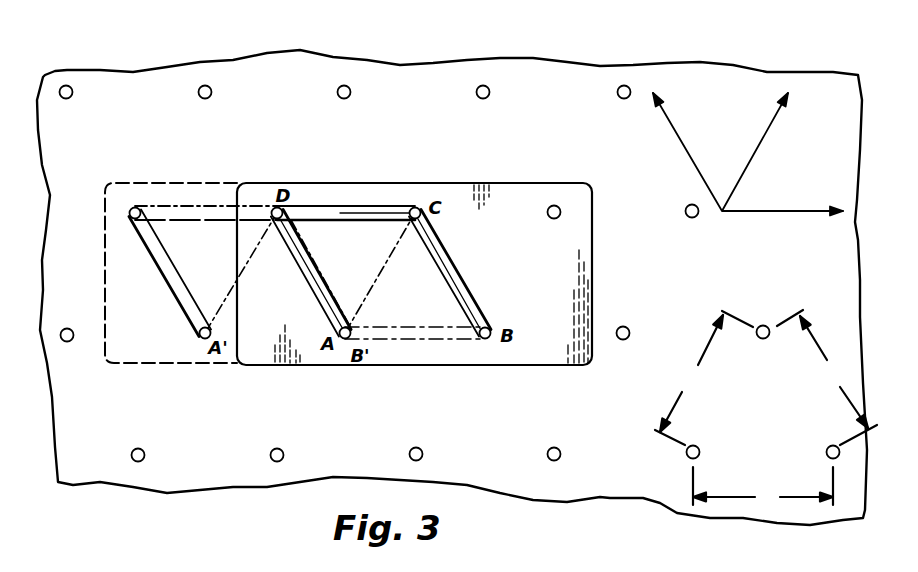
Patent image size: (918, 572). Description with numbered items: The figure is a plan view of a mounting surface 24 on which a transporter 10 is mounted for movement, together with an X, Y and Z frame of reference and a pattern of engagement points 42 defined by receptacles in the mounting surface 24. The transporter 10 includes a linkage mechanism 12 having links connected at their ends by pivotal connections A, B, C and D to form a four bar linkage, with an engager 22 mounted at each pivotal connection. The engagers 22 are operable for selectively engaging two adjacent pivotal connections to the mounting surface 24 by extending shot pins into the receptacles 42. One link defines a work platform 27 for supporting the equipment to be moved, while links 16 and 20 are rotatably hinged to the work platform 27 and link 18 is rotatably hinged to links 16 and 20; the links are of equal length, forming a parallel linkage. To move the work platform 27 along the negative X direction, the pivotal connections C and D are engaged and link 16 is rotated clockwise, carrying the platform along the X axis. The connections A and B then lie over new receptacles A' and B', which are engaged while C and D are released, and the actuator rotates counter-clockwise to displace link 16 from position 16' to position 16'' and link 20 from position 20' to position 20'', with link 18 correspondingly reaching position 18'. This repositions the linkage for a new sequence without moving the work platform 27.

The transporter 10 is at (540, 163).
The linkage mechanism 12 is at (360, 177).
The link 16 is at (311, 273).
The position of link 16 16' is at (244, 273).
The position of link 16 16'' is at (160, 273).
The link 18 is at (346, 228).
The position of link 18 18' is at (206, 235).
The link 20 is at (469, 273).
The position of link 20 20' is at (415, 276).
The position of link 20 20'' is at (334, 274).
The engager 22 is at (117, 185).
The mounting surface 24 is at (565, 112).
The work platform 27 is at (543, 241).
The engagement points 42 is at (348, 88).